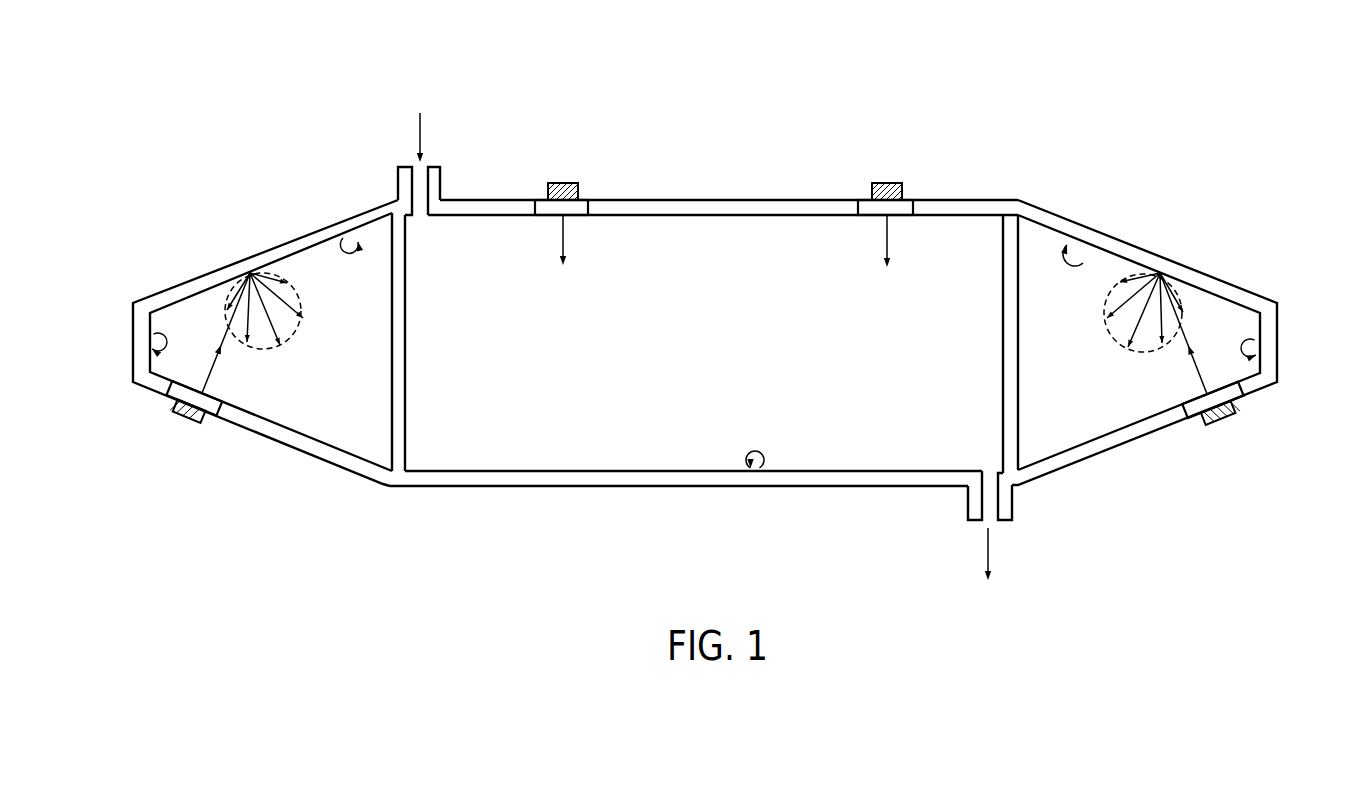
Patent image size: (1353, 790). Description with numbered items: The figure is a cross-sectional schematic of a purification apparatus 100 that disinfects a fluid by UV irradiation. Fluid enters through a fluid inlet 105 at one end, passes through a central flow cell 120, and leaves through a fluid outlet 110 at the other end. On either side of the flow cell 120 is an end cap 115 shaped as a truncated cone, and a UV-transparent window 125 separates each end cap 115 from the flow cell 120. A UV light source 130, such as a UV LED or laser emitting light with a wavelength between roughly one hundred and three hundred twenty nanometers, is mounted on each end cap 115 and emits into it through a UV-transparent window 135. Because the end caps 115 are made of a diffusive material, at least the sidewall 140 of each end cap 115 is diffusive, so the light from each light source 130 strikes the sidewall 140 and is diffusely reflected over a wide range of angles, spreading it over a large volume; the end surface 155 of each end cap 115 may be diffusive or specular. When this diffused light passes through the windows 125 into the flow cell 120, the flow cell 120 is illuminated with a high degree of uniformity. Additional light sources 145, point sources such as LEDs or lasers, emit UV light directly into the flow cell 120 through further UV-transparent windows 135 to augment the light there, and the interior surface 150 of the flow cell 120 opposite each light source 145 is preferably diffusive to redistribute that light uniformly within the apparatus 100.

The purification apparatus 100 is at (250, 128).
The fluid inlet 105 is at (442, 151).
The fluid outlet 110 is at (965, 537).
The end cap 115 is at (297, 440).
The flow cell 120 is at (520, 432).
The UV-transparent window 125 is at (395, 438).
The UV light source 130 is at (188, 428).
The UV-transparent window 135 is at (540, 200).
The sidewall 140 is at (343, 238).
The light source 145 is at (578, 183).
The interior surface 150 is at (760, 468).
The end surface 155 is at (154, 334).